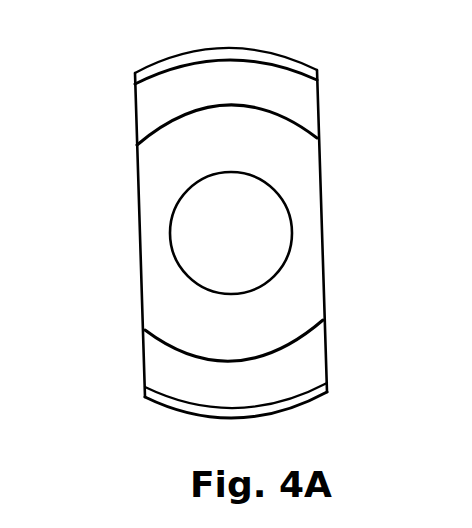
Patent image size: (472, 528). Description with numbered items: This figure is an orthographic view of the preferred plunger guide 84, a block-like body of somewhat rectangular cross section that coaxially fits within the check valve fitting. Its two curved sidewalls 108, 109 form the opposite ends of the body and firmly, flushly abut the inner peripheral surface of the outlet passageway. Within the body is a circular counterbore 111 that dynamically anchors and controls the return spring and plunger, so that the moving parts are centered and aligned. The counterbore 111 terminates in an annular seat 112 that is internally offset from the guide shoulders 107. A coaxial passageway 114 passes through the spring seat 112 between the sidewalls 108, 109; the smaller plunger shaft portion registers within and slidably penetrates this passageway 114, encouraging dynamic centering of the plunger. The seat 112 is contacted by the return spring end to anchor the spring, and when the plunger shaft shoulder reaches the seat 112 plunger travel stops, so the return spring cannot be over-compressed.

The plunger guide 84 is at (105, 122).
The guide shoulders 107 is at (307, 100).
The sidewall 108 is at (224, 48).
The sidewall 109 is at (232, 413).
The counterbore 111 is at (292, 162).
The annular seat 112 is at (160, 305).
The coaxial passageway 114 is at (178, 230).